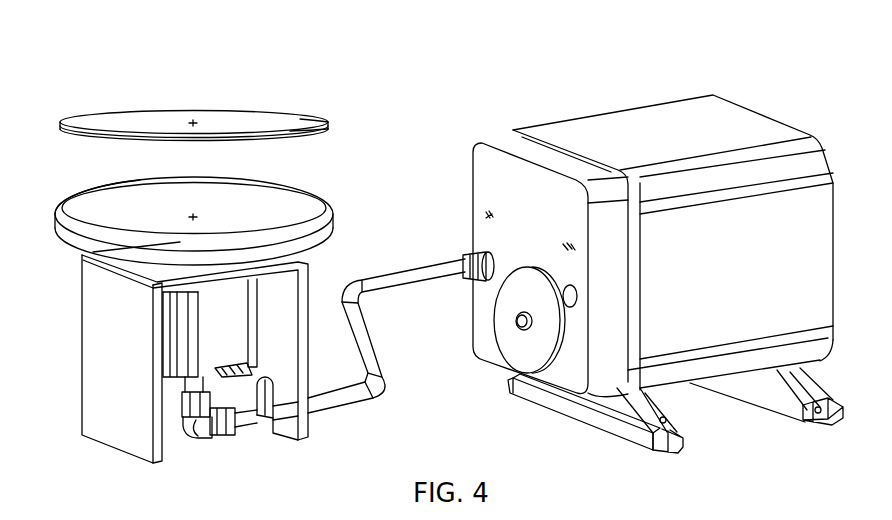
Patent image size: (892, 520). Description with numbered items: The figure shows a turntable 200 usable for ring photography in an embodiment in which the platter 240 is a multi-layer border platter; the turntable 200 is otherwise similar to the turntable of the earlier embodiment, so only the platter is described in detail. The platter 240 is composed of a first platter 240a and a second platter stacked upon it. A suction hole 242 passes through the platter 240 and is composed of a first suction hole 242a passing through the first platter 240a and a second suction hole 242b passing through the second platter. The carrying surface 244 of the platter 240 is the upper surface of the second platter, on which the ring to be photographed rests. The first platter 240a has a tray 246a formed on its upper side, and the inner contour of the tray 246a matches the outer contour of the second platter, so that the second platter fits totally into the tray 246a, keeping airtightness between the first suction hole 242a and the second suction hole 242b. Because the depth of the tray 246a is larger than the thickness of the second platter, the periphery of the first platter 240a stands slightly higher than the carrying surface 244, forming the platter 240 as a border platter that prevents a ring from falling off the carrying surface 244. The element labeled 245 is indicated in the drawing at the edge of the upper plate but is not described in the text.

The turntable 200 is at (838, 480).
The platter 240 is at (155, 67).
The first platter 240a is at (118, 180).
The suction hole 242 is at (287, 62).
The first suction hole 242a is at (193, 218).
The second suction hole 242b is at (193, 124).
The carrying surface 244 is at (305, 124).
The cover plate edge 245 is at (311, 135).
The tray 246a is at (247, 196).